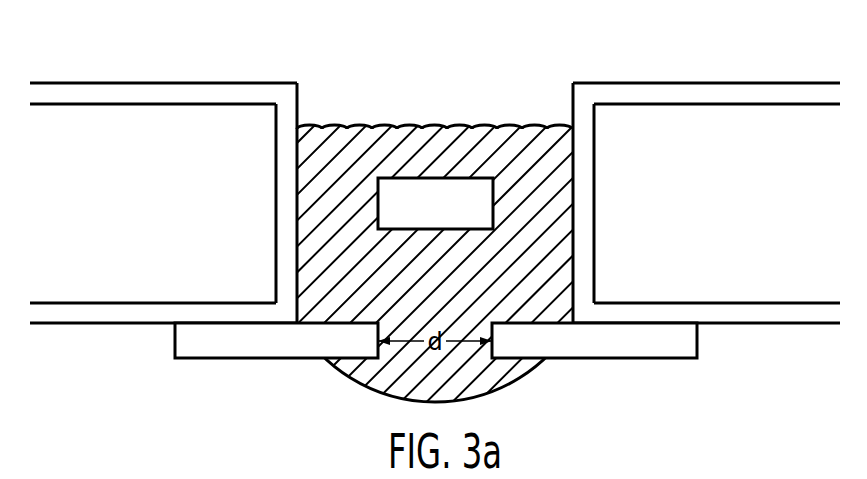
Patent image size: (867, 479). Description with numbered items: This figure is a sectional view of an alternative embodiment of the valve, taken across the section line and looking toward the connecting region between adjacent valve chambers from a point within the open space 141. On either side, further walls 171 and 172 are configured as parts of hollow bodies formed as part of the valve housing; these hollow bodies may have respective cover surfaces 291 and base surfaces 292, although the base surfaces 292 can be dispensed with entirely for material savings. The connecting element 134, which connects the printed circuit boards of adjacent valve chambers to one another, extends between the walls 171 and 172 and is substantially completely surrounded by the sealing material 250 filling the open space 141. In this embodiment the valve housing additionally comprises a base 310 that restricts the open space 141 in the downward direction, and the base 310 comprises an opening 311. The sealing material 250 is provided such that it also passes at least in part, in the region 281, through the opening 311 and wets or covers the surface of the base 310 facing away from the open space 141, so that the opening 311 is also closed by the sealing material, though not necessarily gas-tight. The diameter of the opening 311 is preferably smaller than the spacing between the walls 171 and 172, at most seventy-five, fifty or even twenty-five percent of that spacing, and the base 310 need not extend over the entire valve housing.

The connecting element 134 is at (468, 193).
The open space 141 is at (478, 76).
The further wall 171 is at (591, 158).
The further wall 172 is at (277, 172).
The sealing material 250 is at (376, 141).
The region 281 is at (385, 391).
The cover surface 291 is at (139, 83).
The base surface 292 is at (92, 317).
The base 310 is at (237, 352).
The opening 311 is at (463, 352).